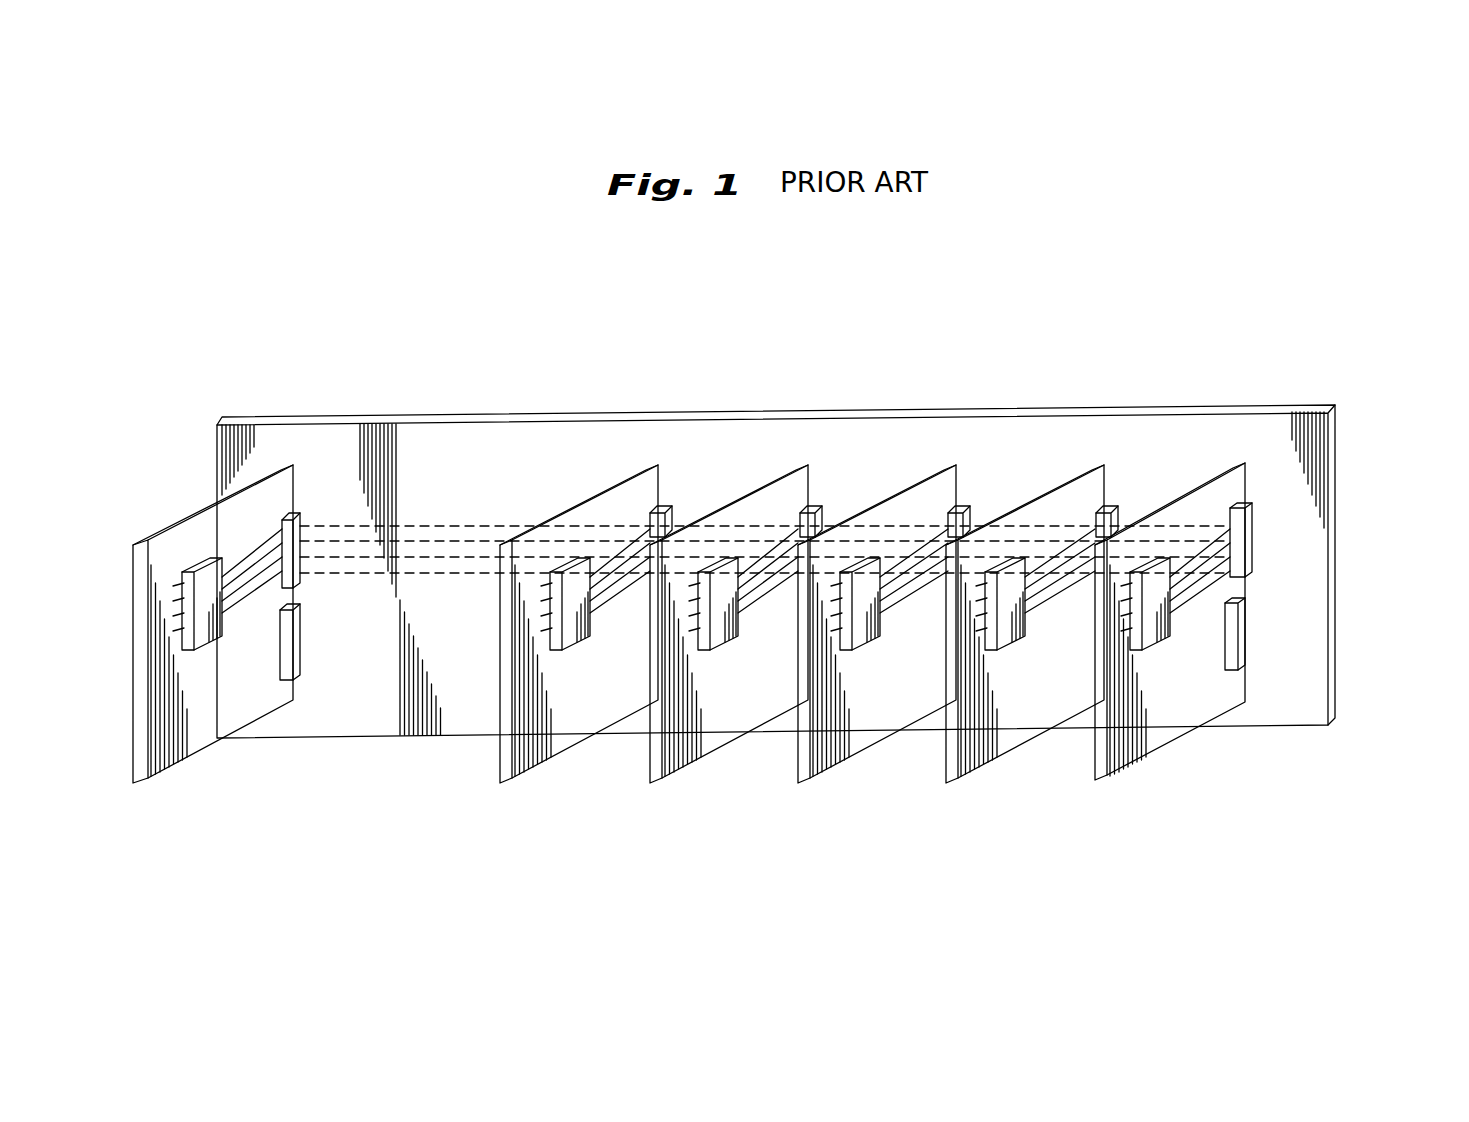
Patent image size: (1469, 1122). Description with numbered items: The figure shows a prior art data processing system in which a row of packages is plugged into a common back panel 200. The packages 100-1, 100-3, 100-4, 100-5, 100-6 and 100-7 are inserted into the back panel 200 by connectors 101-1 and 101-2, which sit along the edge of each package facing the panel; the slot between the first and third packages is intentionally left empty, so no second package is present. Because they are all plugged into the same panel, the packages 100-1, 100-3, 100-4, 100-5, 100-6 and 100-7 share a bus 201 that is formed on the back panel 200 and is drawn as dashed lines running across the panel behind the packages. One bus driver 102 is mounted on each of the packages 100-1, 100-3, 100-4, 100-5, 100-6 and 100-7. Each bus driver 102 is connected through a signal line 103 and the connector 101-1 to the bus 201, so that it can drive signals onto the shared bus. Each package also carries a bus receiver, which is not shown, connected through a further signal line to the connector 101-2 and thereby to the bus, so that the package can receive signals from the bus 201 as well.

The back panel 200 is at (1222, 437).
The bus 201 is at (420, 526).
The package 100-1 is at (198, 740).
The package 100-3 is at (591, 647).
The package 100-4 is at (740, 647).
The package 100-5 is at (886, 647).
The package 100-6 is at (1036, 647).
The package 100-7 is at (1182, 646).
The connector 101-1 is at (1253, 535).
The connector 101-2 is at (1245, 640).
The bus driver 102 is at (210, 650).
The signal line 103 is at (235, 548).